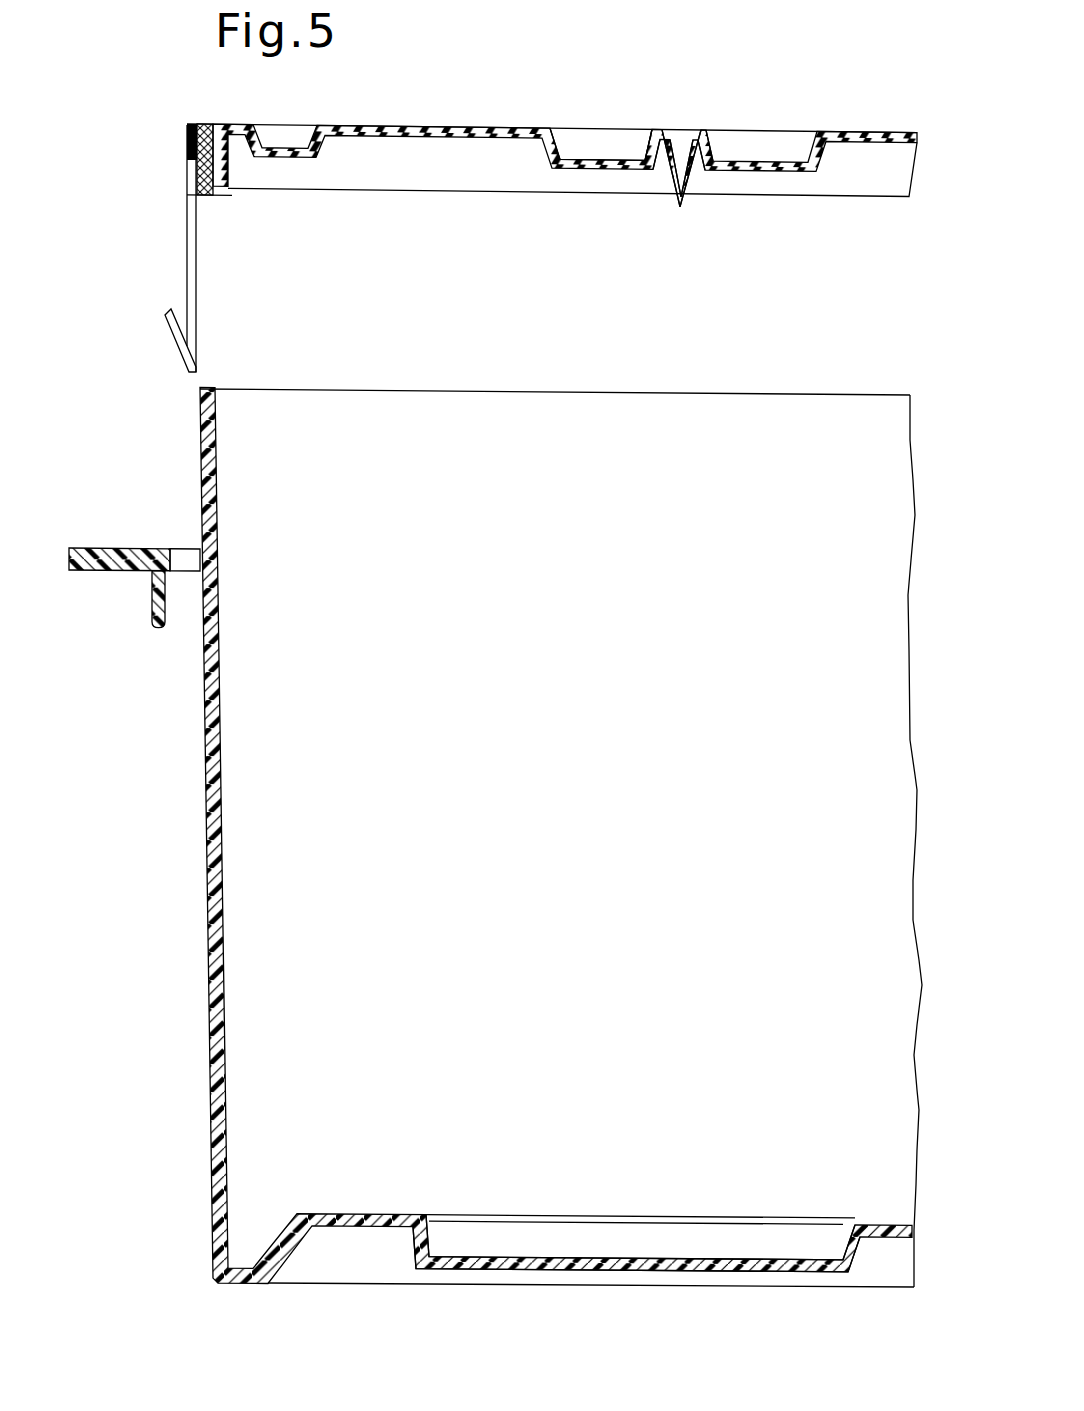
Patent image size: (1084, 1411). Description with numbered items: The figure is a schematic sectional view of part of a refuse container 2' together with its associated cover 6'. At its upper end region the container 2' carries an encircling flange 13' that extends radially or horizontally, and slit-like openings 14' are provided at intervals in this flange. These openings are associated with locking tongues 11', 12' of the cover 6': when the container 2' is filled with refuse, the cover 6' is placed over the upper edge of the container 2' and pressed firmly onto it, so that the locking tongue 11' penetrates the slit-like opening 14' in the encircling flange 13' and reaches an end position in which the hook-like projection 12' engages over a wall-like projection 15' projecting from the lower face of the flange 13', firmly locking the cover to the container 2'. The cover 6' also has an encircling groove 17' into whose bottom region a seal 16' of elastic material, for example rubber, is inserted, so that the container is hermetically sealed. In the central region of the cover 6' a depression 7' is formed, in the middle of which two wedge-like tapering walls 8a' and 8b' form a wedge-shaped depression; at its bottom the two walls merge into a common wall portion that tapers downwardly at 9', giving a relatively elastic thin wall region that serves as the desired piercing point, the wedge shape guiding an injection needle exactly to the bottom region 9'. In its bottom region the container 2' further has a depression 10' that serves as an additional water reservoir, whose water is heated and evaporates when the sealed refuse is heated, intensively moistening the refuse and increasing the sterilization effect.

The refuse container 2' is at (527, 838).
The cover 6' is at (552, 126).
The depression 7' is at (601, 110).
The wedge-like tapering wall 8a' is at (634, 183).
The wedge-like tapering wall 8b' is at (737, 183).
The bottom region of the depression 9' is at (687, 203).
The depression 10' is at (636, 1277).
The locking tongue 11' is at (232, 248).
The hook-like projection 12' is at (157, 347).
The encircling flange 13' is at (119, 518).
The slit-like opening 14' is at (177, 518).
The wall-like projection 15' is at (154, 634).
The seal 16' is at (174, 159).
The encircling groove 17' is at (183, 213).